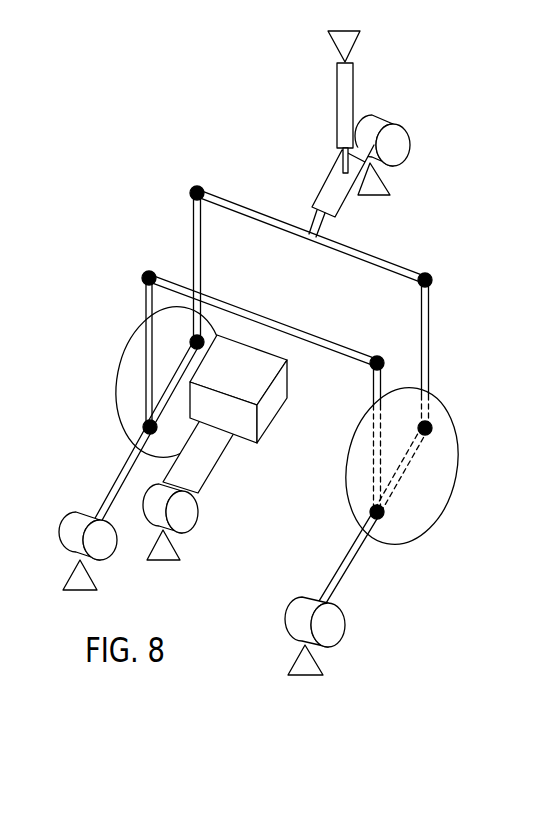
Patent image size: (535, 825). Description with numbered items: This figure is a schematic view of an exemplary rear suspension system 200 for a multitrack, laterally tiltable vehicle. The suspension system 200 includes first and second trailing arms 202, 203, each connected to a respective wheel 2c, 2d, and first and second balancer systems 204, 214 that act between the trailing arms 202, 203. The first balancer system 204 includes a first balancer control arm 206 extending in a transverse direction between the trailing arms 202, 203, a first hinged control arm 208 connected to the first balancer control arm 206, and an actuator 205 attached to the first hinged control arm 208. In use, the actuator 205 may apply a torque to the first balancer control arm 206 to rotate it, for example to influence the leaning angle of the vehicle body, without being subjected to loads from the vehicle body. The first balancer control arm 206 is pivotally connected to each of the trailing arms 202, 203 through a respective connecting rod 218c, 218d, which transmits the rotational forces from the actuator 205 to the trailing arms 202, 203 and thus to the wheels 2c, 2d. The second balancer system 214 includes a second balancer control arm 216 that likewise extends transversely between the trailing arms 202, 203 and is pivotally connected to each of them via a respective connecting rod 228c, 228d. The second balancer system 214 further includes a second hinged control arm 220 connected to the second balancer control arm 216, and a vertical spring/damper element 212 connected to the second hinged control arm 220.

The suspension system 200 is at (132, 150).
The first trailing arm 202 is at (114, 483).
The second trailing arm 203 is at (350, 565).
The first balancer system 204 is at (222, 447).
The actuator 205 is at (246, 405).
The first balancer control arm 206 is at (302, 331).
The first hinged control arm 208 is at (203, 468).
The vertical spring/damper element 212 is at (337, 106).
The second balancer system 214 is at (415, 102).
The second balancer control arm 216 is at (362, 250).
The connecting rod 218c is at (146, 305).
The connecting rod 218d is at (373, 383).
The second hinged control arm 220 is at (325, 183).
The connecting rod 228c is at (193, 233).
The connecting rod 228d is at (428, 302).
The wheel 2c is at (122, 365).
The wheel 2d is at (455, 421).